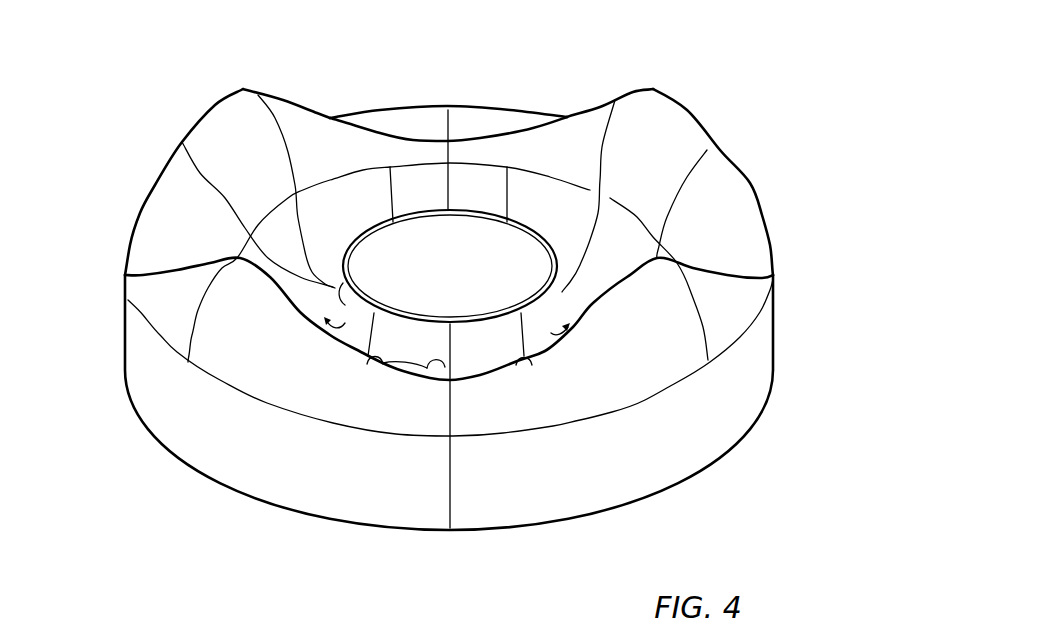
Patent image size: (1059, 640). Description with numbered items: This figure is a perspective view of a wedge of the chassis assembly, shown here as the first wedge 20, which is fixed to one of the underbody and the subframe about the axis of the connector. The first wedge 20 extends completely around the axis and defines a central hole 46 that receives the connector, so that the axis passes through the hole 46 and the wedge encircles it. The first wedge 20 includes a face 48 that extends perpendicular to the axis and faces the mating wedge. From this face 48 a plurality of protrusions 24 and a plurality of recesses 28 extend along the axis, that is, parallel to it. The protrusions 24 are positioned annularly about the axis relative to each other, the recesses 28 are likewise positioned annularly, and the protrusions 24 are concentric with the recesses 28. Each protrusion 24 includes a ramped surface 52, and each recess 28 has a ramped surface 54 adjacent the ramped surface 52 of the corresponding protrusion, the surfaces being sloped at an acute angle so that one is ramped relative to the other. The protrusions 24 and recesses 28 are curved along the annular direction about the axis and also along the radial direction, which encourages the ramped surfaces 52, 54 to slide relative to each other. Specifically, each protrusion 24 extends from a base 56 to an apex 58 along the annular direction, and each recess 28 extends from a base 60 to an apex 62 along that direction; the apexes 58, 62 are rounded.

The first wedge 20 is at (166, 526).
The protrusion 24 is at (254, 66).
The recess 28 is at (313, 226).
The hole 46 is at (522, 262).
The face 48 is at (738, 66).
The ramped surface 52 is at (588, 110).
The ramped surface 54 is at (425, 218).
The base 56 is at (448, 143).
The apex 58 is at (243, 89).
The base 60 is at (452, 212).
The apex 62 is at (182, 142).